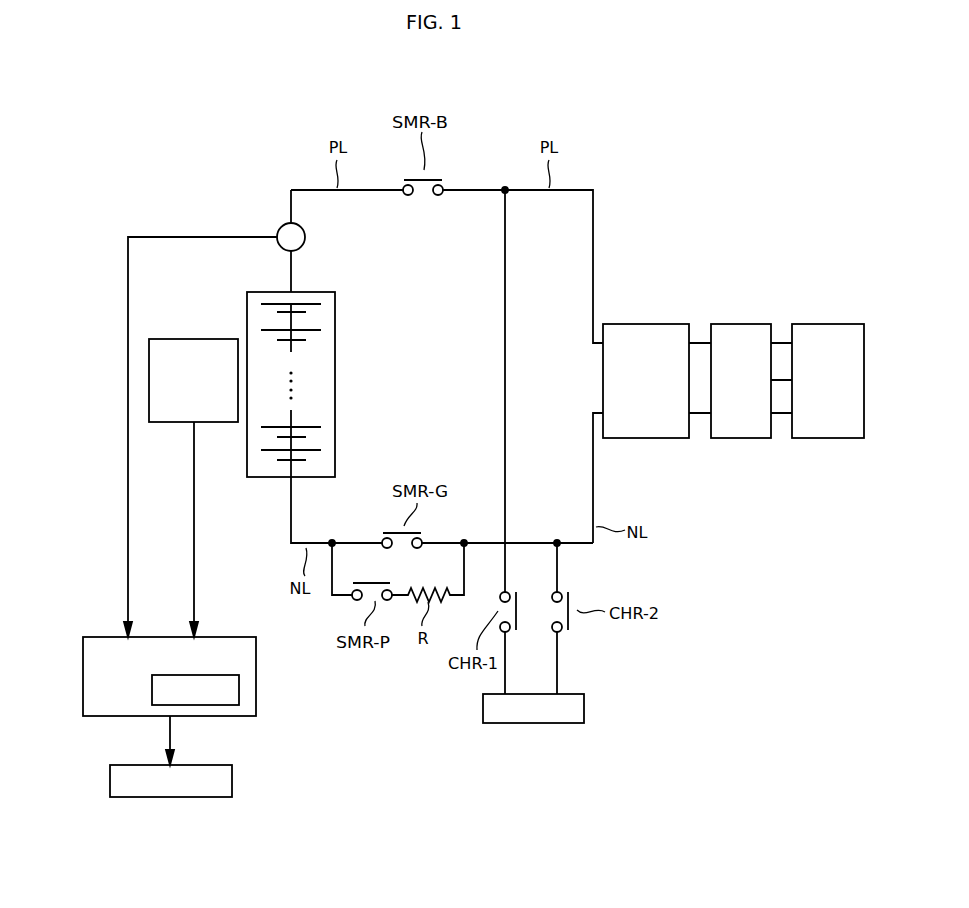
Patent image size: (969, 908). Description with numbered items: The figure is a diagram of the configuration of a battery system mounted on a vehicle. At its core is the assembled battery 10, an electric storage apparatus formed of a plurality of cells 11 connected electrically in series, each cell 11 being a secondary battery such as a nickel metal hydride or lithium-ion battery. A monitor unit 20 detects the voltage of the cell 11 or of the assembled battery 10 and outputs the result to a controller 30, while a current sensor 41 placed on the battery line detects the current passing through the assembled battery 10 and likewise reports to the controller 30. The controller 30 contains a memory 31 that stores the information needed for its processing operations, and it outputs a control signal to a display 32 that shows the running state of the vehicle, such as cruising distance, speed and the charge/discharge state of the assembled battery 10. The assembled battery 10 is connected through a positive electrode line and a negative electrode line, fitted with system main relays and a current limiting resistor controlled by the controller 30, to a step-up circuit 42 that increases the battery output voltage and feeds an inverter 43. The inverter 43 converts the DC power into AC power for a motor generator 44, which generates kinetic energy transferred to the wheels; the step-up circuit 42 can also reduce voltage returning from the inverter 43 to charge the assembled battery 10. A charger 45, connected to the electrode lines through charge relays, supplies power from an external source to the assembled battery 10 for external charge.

The assembled battery 10 is at (336, 377).
The cell 11 is at (318, 310).
The monitor unit 20 is at (192, 339).
The controller 30 is at (83, 677).
The memory 31 is at (240, 690).
The display 32 is at (233, 780).
The current sensor 41 is at (277, 227).
The step-up circuit 42 is at (646, 440).
The inverter 43 is at (741, 440).
The motor generator 44 is at (826, 440).
The charger 45 is at (585, 707).